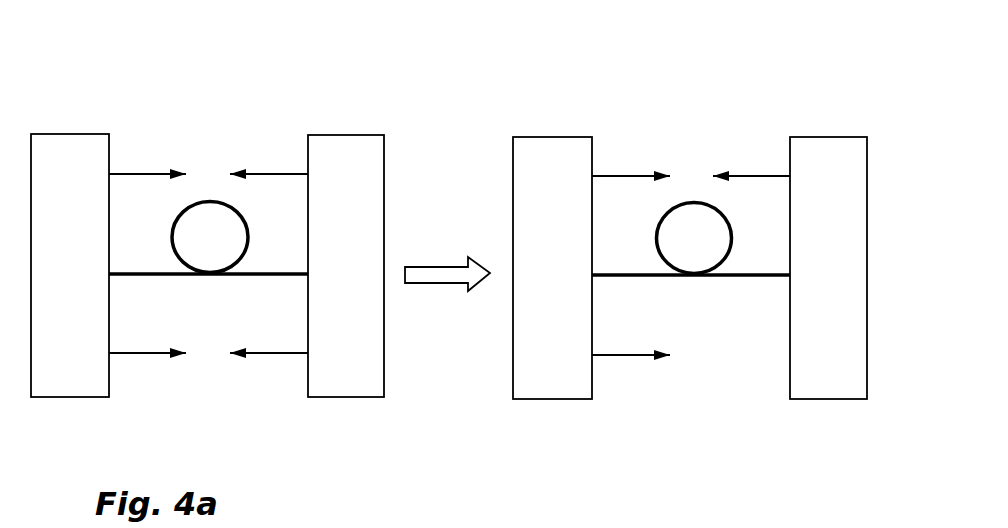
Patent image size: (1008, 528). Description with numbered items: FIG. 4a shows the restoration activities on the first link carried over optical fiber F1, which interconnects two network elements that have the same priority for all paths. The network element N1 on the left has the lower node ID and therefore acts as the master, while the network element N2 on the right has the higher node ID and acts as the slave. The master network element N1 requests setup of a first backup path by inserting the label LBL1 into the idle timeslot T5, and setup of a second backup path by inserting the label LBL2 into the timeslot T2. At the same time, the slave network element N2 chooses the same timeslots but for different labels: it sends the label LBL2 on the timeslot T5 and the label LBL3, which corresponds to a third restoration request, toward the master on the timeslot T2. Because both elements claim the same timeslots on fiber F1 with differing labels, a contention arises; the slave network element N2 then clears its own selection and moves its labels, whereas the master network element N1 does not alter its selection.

The network element N1 is at (323, 244).
The network element N2 is at (599, 244).
The optical fiber F1 is at (449, 260).
The timeslot T2 is at (442, 169).
The idle timeslot T5 is at (324, 346).
The label LBL1 is at (389, 337).
The label LBL2 is at (449, 246).
The label LBL3 is at (269, 157).